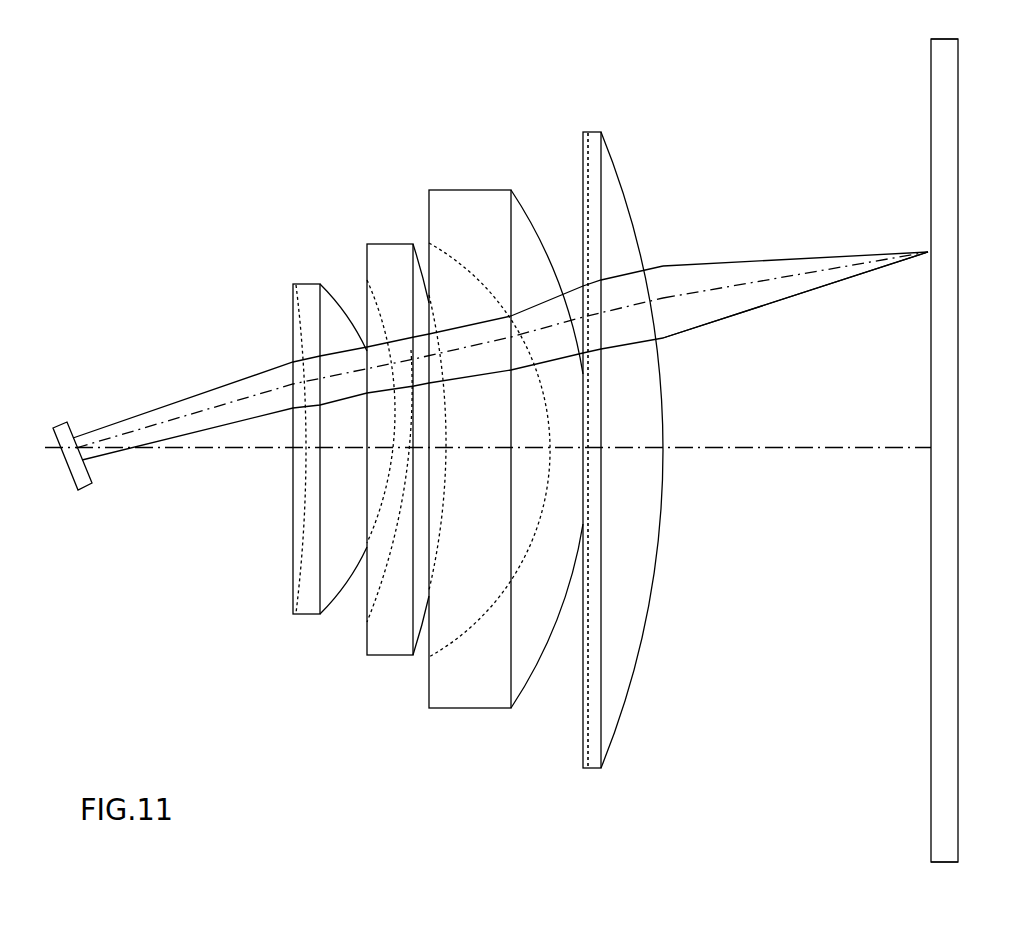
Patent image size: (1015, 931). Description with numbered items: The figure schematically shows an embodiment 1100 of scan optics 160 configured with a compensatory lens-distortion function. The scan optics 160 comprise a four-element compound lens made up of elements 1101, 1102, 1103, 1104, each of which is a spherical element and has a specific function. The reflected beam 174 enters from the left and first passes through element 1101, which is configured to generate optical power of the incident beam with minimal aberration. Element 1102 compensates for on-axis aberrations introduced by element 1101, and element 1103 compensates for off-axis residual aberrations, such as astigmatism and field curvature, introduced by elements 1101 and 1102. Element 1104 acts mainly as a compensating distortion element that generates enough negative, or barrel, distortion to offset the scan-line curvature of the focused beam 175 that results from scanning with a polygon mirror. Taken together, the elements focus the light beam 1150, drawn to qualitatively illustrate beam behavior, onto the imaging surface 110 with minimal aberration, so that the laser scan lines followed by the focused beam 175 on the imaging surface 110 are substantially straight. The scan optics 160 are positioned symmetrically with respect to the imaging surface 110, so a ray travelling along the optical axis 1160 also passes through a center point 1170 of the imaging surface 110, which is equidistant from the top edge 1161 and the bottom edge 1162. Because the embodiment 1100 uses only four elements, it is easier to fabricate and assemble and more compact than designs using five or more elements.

The embodiment of scan optics 1100 is at (292, 175).
The scan optics 160 is at (292, 221).
The reflected beam 174 is at (242, 378).
The focused beam 175 is at (803, 290).
The light beam 1150 is at (718, 318).
The optical axis 1160 is at (782, 448).
The center point 1170 is at (915, 434).
The first element 1101 is at (315, 618).
The second element 1102 is at (392, 657).
The third element 1103 is at (473, 710).
The fourth element 1104 is at (590, 770).
The imaging surface 110 is at (931, 600).
The top edge 1161 is at (945, 38).
The bottom edge 1162 is at (945, 863).